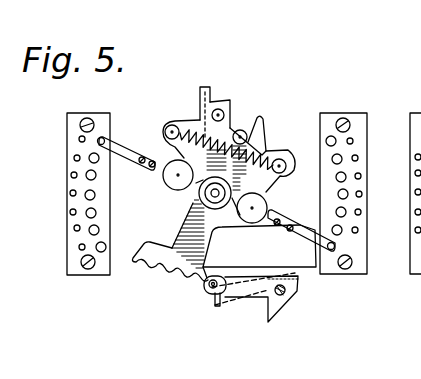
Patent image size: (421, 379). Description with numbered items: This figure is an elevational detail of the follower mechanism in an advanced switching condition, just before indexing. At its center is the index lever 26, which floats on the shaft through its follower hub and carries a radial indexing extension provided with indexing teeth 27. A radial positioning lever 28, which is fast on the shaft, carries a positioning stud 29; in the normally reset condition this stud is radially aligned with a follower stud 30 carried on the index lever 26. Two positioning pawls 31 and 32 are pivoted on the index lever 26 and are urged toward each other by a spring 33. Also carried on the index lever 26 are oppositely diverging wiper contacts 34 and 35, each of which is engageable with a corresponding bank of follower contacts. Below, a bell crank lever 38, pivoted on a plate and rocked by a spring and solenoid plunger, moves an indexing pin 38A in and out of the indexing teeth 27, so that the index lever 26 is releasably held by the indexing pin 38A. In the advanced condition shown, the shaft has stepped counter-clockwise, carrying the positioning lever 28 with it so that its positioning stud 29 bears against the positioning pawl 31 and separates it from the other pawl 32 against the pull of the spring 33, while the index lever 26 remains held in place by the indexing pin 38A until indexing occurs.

The index lever 26 is at (222, 230).
The indexing teeth 27 is at (160, 288).
The positioning lever 28 is at (231, 100).
The positioning stud 29 is at (224, 113).
The follower stud 30 is at (252, 122).
The positioning pawl 31 is at (200, 90).
The positioning pawl 32 is at (265, 128).
The spring 33 is at (272, 150).
The wiper contact 34 is at (312, 243).
The wiper contact 35 is at (140, 150).
The bell crank lever 38 is at (262, 295).
The indexing pin 38A is at (210, 290).